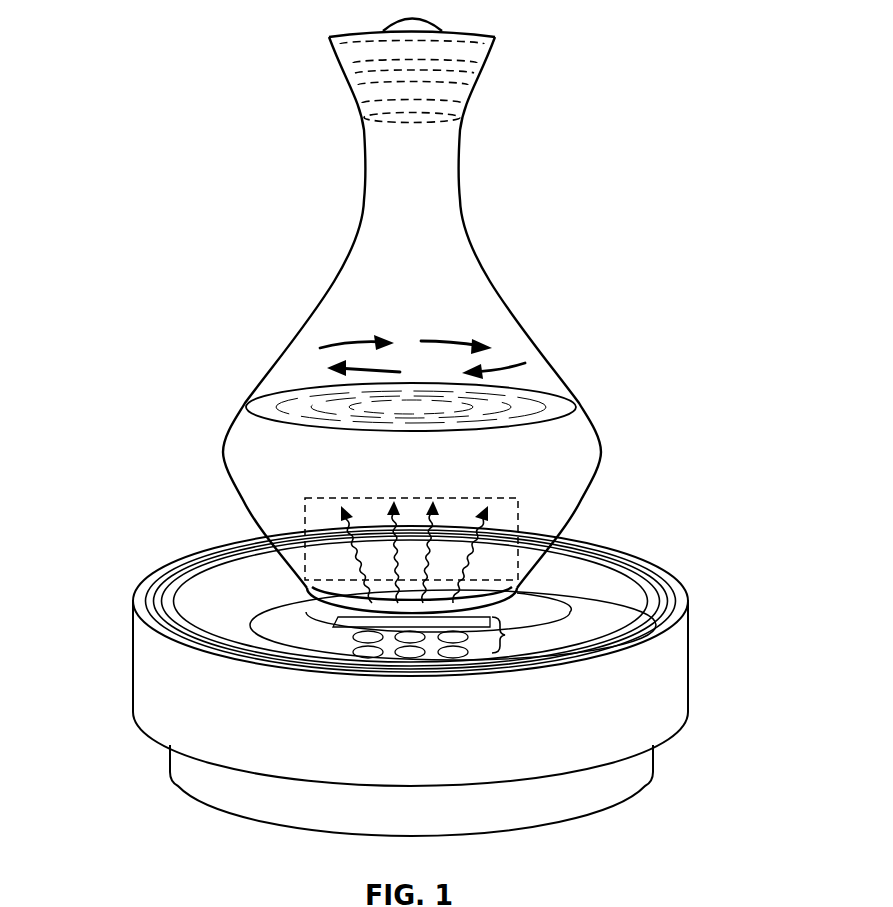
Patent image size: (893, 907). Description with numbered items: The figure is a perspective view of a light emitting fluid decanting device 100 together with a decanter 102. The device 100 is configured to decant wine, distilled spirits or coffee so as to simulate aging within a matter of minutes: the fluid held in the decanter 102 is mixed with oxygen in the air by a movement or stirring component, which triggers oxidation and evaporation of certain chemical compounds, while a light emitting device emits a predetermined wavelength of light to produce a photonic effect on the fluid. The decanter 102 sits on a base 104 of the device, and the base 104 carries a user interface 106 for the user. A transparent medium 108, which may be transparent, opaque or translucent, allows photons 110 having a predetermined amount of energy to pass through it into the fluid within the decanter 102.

The light emitting fluid decanting device 100 is at (122, 627).
The decanter 102 is at (490, 275).
The base 104 is at (690, 688).
The user interface 106 is at (508, 635).
The transparent medium 108 is at (476, 606).
The photons 110 is at (510, 523).